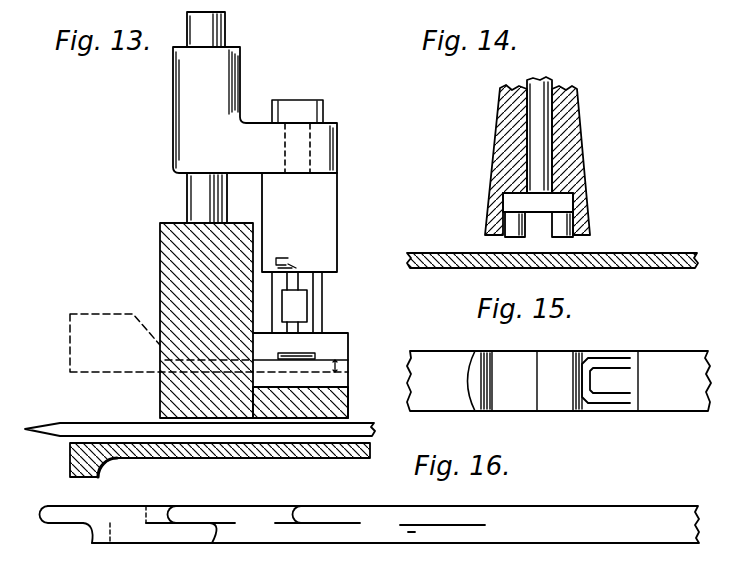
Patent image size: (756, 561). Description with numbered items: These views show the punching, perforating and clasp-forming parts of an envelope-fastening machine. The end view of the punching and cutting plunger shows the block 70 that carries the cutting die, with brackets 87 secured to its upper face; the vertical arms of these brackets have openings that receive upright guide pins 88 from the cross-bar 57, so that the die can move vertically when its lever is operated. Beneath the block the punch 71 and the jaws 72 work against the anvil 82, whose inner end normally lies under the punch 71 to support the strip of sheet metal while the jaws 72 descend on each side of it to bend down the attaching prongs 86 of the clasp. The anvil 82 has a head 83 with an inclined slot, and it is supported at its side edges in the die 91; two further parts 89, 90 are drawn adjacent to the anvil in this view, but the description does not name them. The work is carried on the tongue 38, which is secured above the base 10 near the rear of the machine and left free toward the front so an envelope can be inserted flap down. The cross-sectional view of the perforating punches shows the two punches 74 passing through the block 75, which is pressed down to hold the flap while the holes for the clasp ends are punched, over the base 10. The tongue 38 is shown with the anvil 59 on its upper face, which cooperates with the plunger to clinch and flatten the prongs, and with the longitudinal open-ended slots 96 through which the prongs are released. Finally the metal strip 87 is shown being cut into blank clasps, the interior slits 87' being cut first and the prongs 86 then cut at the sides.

In FIG. 13, the base 10 is at (214, 458).
In FIG. 14, the base 10 is at (622, 254).
In FIG. 13, the tongue 38 is at (141, 422).
In FIG. 15, the tongue 38 is at (456, 352).
In FIG. 13, the cross-bar 57 is at (160, 262).
In FIG. 15, the anvil 59 is at (509, 405).
In FIG. 13, the block 70 is at (337, 228).
In FIG. 13, the punch 71 is at (322, 306).
In FIG. 13, the jaws 72 is at (298, 283).
In FIG. 14, the punches 74 is at (577, 212).
In FIG. 14, the block 75 is at (567, 135).
In FIG. 13, the anvil 82 is at (340, 362).
In FIG. 13, the head 83 is at (65, 353).
In FIG. 16, the attaching prongs 86 is at (84, 536).
In FIG. 13, the metal strip 87 is at (255, 110).
In FIG. 16, the metal strip 87 is at (370, 515).
In FIG. 16, the interior slits 87' is at (442, 543).
In FIG. 13, the guide pins 88 is at (187, 196).
In FIG. 13, the plate 89 is at (313, 353).
In FIG. 13, the gap 90 is at (340, 333).
In FIG. 13, the die 91 is at (337, 385).
In FIG. 15, the slots 96 is at (610, 358).